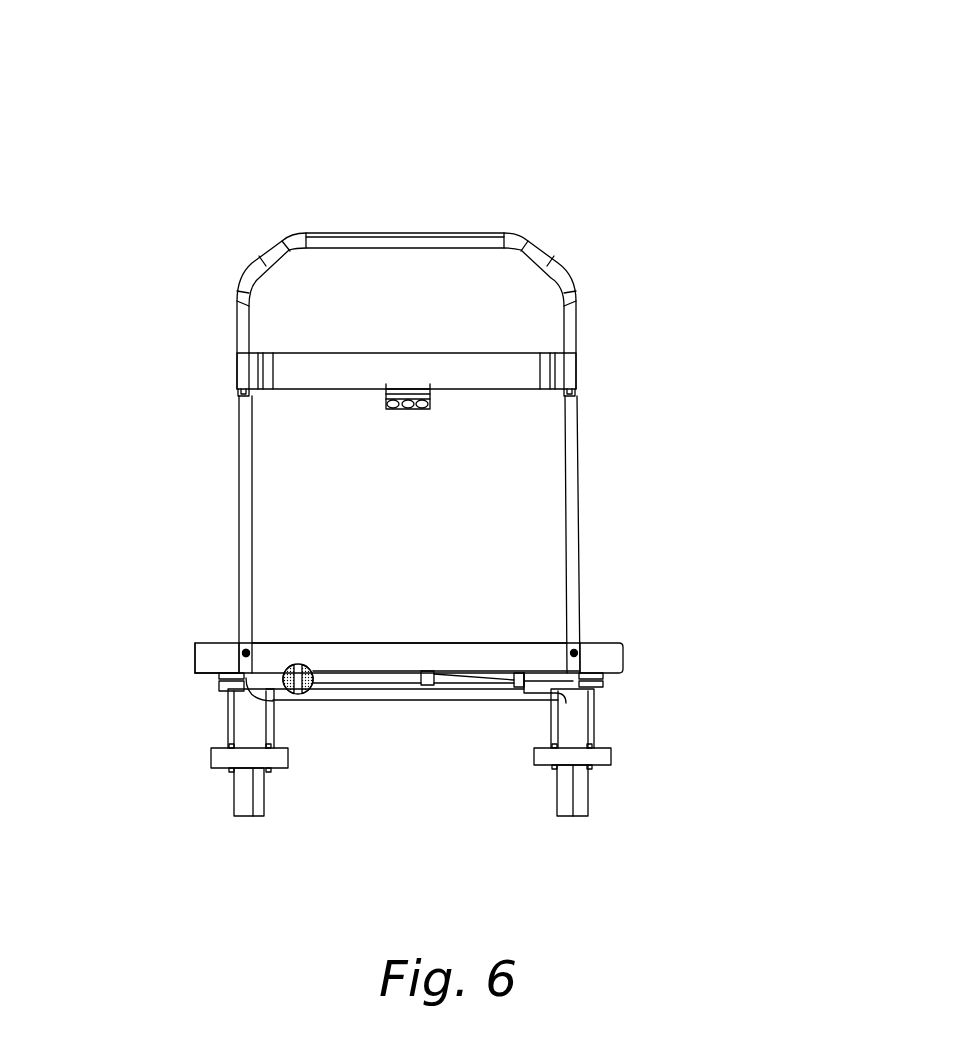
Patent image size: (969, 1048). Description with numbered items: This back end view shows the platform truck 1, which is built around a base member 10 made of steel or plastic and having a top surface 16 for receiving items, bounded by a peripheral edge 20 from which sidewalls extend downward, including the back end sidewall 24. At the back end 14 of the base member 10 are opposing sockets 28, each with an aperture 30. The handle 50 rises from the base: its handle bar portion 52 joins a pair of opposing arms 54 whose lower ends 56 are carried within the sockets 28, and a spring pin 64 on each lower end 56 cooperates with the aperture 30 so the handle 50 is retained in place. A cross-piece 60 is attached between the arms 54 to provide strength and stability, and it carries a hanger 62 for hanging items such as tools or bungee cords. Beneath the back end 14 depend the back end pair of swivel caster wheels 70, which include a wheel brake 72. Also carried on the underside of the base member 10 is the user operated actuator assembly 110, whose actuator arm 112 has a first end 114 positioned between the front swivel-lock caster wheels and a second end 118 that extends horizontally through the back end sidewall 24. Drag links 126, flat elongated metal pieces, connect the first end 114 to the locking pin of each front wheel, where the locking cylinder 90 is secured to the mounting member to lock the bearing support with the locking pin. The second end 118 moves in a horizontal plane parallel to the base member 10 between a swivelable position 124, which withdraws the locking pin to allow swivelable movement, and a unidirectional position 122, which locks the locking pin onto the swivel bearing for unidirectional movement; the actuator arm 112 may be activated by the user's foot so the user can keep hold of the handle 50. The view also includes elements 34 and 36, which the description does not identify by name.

The platform truck 1 is at (495, 163).
The base member 10 is at (598, 648).
The back end 14 is at (618, 658).
The top surface 16 is at (465, 642).
The peripheral edge 20 is at (195, 640).
The back end sidewall 24 is at (212, 648).
The sockets 28 is at (240, 640).
The aperture 30 is at (247, 652).
The tie rod 34 is at (457, 692).
The locking rod 36 is at (290, 675).
The handle 50 is at (383, 240).
The handle bar portion 52 is at (490, 243).
The arms 54 is at (575, 487).
The lower ends 56 is at (243, 530).
The cross-piece 60 is at (510, 362).
The hanger 62 is at (390, 397).
The spring pin 64 is at (249, 652).
The swivel caster wheels 70 is at (585, 803).
The wheel brake 72 is at (625, 752).
The locking cylinder 90 is at (516, 687).
The actuator assembly 110 is at (355, 675).
The actuator arm 112 is at (397, 677).
The first end 114 is at (425, 677).
The second end 118 is at (303, 688).
The unidirectional position 122 is at (292, 683).
The swivelable position 124 is at (577, 685).
The drag links 126 is at (482, 680).